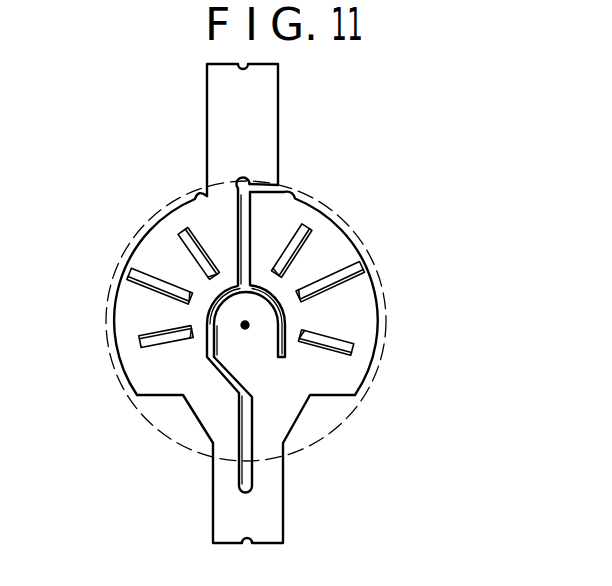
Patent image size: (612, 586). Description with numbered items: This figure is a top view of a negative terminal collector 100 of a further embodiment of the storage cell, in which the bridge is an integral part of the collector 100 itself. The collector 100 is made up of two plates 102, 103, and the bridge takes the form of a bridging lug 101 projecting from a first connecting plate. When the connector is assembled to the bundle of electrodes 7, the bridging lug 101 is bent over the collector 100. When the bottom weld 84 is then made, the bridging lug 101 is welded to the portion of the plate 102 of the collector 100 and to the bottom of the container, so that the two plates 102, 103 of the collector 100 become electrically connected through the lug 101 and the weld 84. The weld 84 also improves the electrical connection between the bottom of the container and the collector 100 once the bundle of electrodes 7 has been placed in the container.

The collector 100 is at (377, 348).
The bridging lug 101 is at (260, 122).
The plate 102 is at (160, 258).
The plate 103 is at (332, 255).
The bottom weld 84 is at (245, 325).
The bundle of electrodes 7 is at (338, 437).